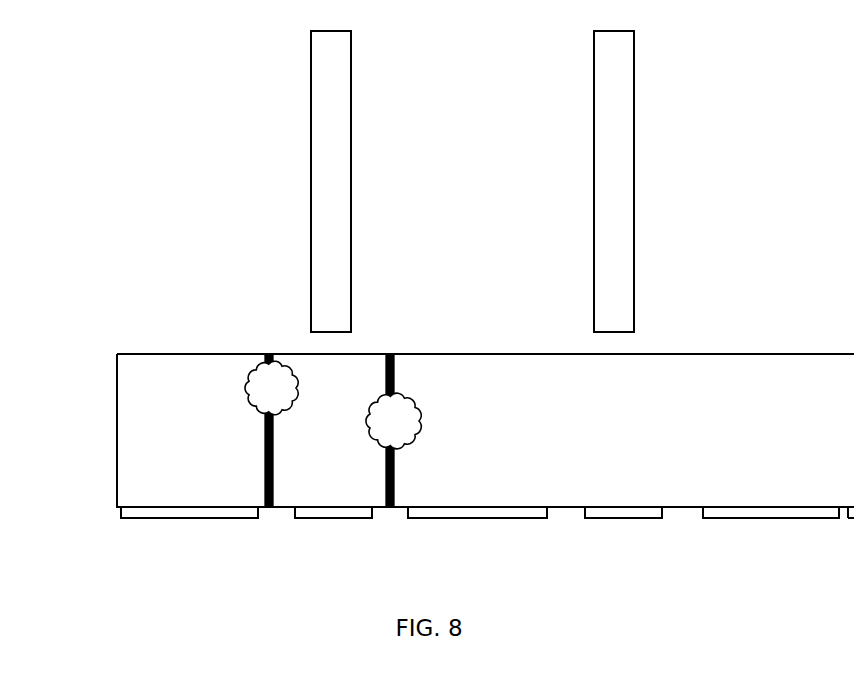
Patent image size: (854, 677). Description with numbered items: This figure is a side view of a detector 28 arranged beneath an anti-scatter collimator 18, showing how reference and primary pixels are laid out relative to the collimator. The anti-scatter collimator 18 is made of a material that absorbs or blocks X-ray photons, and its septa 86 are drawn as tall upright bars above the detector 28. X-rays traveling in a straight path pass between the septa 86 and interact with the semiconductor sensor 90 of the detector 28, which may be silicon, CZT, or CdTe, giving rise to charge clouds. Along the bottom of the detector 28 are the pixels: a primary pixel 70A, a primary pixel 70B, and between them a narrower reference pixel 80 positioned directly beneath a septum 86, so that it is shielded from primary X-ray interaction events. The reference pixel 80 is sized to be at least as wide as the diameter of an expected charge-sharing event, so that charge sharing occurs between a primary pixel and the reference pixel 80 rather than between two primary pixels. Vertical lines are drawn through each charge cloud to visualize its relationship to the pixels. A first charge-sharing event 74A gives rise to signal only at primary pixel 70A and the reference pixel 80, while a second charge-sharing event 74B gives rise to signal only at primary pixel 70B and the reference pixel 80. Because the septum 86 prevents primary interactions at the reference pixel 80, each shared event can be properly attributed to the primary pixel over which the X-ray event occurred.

The anti-scatter collimator 18 is at (528, 181).
The detector 28 is at (108, 437).
The primary pixel 70A is at (190, 521).
The primary pixel 70B is at (450, 521).
The first charge-sharing event 74A is at (246, 359).
The second charge-sharing event 74B is at (404, 393).
The reference pixel 80 is at (335, 521).
The septa 86 is at (351, 152).
The semiconductor sensor 90 is at (765, 353).